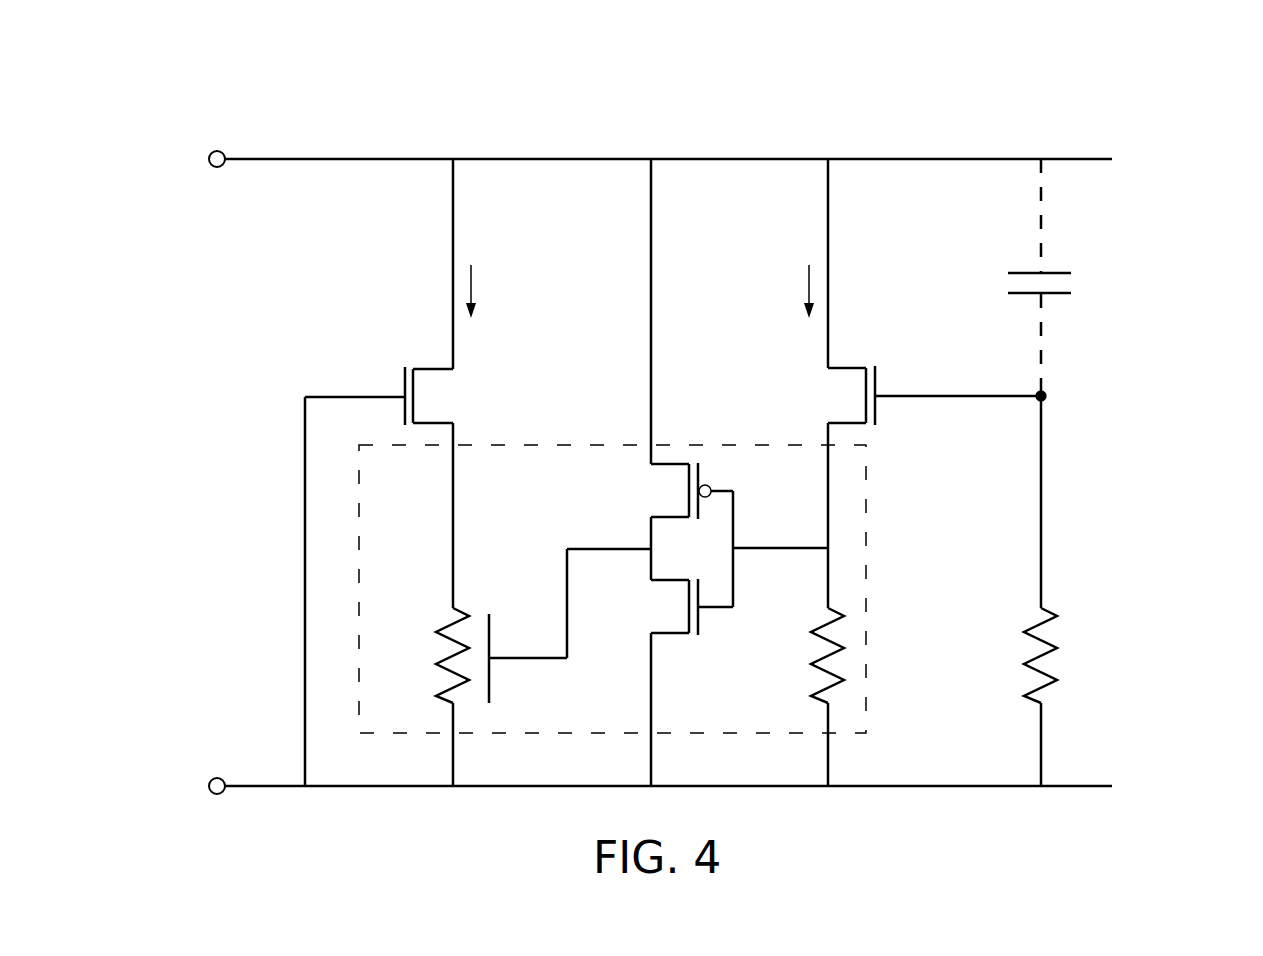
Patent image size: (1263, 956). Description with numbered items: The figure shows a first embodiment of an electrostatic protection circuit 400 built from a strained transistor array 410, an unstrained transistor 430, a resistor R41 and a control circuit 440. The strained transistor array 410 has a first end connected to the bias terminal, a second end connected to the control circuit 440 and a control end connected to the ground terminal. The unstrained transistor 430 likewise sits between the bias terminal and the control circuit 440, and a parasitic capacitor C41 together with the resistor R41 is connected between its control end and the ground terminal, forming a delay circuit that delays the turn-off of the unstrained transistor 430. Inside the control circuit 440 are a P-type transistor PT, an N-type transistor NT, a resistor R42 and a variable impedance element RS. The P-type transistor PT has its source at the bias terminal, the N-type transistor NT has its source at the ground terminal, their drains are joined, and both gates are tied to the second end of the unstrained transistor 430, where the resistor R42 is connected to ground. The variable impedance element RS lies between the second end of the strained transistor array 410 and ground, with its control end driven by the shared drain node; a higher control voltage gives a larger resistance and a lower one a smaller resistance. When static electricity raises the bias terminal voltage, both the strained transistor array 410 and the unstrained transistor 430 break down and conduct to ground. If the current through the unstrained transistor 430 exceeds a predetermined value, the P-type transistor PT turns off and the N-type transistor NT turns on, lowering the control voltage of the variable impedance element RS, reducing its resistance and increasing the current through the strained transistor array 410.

The electrostatic protection circuit 400 is at (1141, 106).
The strained transistor array 410 is at (415, 349).
The unstrained transistor 430 is at (866, 348).
The control circuit 440 is at (866, 556).
The variable impedance element RS is at (429, 655).
The resistor R41 is at (1069, 591).
The resistor R42 is at (799, 655).
The parasitic capacitor C41 is at (1065, 277).
The P-type transistor PT is at (674, 491).
The N-type transistor NT is at (672, 607).